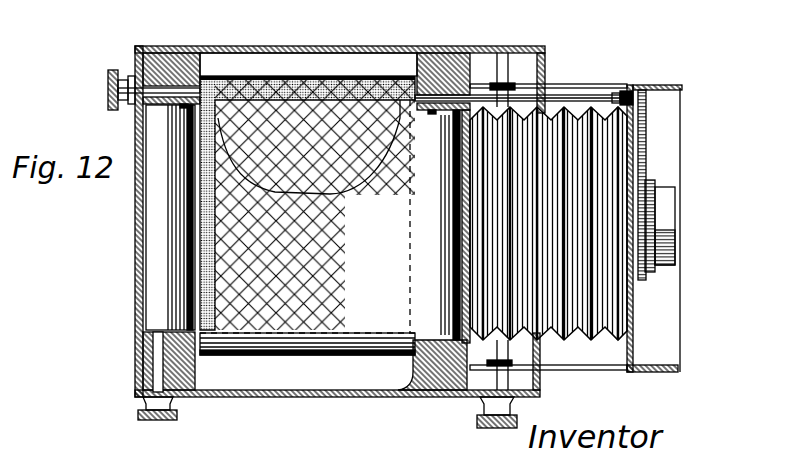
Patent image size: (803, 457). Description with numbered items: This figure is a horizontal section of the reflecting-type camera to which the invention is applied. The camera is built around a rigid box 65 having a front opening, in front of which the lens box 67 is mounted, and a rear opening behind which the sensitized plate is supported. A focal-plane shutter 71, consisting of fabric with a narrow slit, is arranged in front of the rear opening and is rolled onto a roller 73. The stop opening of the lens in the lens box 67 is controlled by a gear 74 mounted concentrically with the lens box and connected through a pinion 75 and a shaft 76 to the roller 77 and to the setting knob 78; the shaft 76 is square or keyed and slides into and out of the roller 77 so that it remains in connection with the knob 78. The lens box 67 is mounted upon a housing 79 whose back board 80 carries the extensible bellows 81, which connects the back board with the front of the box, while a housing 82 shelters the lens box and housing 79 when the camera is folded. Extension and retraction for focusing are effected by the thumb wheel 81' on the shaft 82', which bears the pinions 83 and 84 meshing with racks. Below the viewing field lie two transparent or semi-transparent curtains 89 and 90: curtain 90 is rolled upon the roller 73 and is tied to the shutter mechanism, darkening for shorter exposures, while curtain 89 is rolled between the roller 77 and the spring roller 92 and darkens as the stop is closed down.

The rigid box 65 is at (290, 53).
The lens box 67 is at (665, 213).
The shutter 71 is at (150, 247).
The roller 73 is at (137, 335).
The gear 74 is at (648, 148).
The pinion 75 is at (653, 84).
The shaft 76 is at (582, 97).
The roller 77 is at (408, 54).
The setting knob 78 is at (108, 80).
The housing 79 is at (662, 333).
The back board 80 is at (625, 348).
The extensible bellows 81 is at (627, 79).
The knob or thumb wheel 81' is at (471, 421).
The housing 82 is at (485, 62).
The shaft 82' is at (536, 364).
The pinion 83 is at (512, 372).
The pinion 84 is at (536, 53).
The curtain 89 is at (337, 78).
The curtain 90 is at (240, 77).
The roller 92 is at (395, 393).